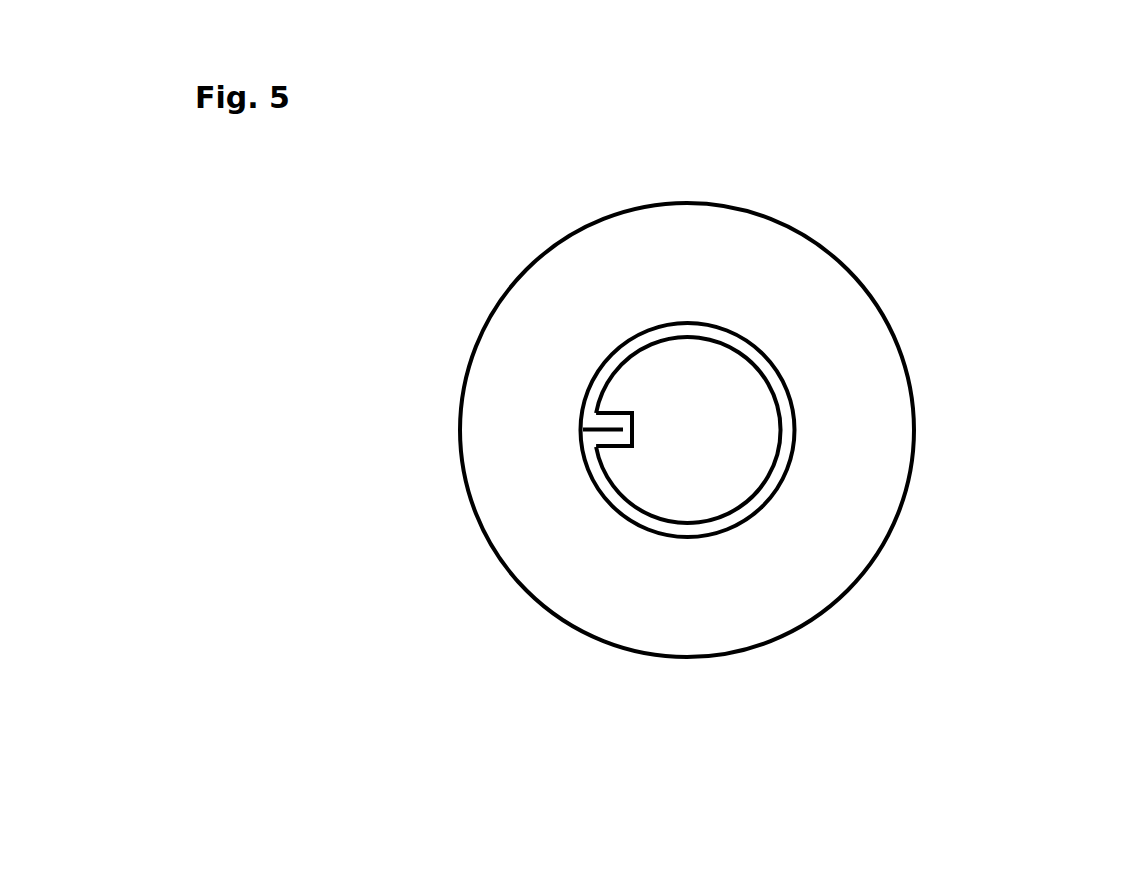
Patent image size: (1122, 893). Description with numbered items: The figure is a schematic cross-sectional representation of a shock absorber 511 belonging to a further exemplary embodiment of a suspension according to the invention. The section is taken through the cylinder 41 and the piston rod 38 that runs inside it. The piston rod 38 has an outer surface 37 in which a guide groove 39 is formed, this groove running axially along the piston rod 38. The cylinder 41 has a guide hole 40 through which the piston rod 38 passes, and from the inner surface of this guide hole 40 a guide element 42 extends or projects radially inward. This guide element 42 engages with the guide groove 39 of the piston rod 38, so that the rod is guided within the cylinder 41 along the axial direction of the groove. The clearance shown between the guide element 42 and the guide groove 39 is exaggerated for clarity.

The shock absorber 511 is at (930, 428).
The cylinder 41 is at (838, 536).
The outer surface 37 is at (688, 330).
The piston rod 38 is at (747, 400).
The guide groove 39 is at (613, 447).
The guide hole 40 is at (688, 537).
The guide element 42 is at (611, 413).